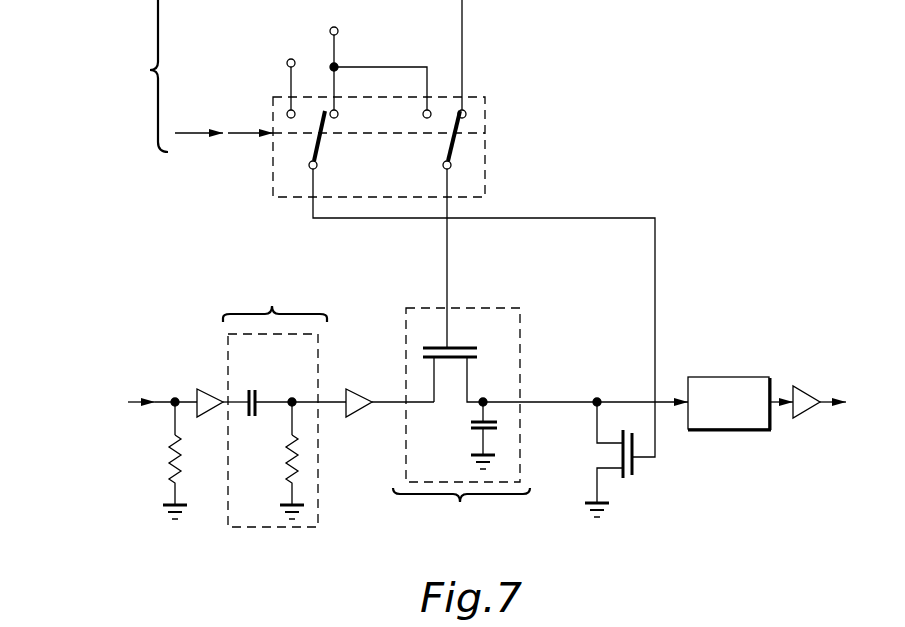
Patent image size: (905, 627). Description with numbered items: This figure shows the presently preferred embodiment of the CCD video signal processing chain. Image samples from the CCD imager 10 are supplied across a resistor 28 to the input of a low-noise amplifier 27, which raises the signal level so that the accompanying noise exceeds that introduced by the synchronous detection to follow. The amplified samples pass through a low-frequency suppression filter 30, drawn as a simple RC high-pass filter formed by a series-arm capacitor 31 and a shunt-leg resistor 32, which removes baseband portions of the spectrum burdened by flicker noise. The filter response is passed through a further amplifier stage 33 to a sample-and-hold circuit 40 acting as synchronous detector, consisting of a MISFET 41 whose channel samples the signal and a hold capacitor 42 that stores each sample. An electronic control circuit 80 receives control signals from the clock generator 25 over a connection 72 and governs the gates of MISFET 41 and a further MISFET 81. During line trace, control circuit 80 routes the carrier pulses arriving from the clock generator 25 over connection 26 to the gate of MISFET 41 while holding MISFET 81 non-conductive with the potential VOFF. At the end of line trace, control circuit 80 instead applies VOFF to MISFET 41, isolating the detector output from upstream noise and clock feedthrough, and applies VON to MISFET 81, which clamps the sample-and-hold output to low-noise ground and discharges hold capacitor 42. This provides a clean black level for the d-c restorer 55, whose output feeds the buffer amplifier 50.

The CCD imager 10 is at (132, 414).
The clock generator 25 is at (117, 76).
The connection 26 is at (247, 0).
The low-noise amplifier 27 is at (207, 389).
The resistor 28 is at (168, 459).
The low-frequency suppression filter 30 is at (313, 300).
The series-arm capacitor 31 is at (249, 389).
The shunt-leg resistor 32 is at (286, 459).
The amplifier 33 is at (361, 389).
The sample-and-hold circuit 40 is at (508, 557).
The MISFET 41 is at (466, 347).
The hold capacitor 42 is at (471, 425).
The buffer amplifier 50 is at (800, 418).
The d-c restorer 55 is at (729, 430).
The connection 72 is at (185, 131).
The electronic control circuit 80 is at (464, 229).
The MISFET 81 is at (634, 470).